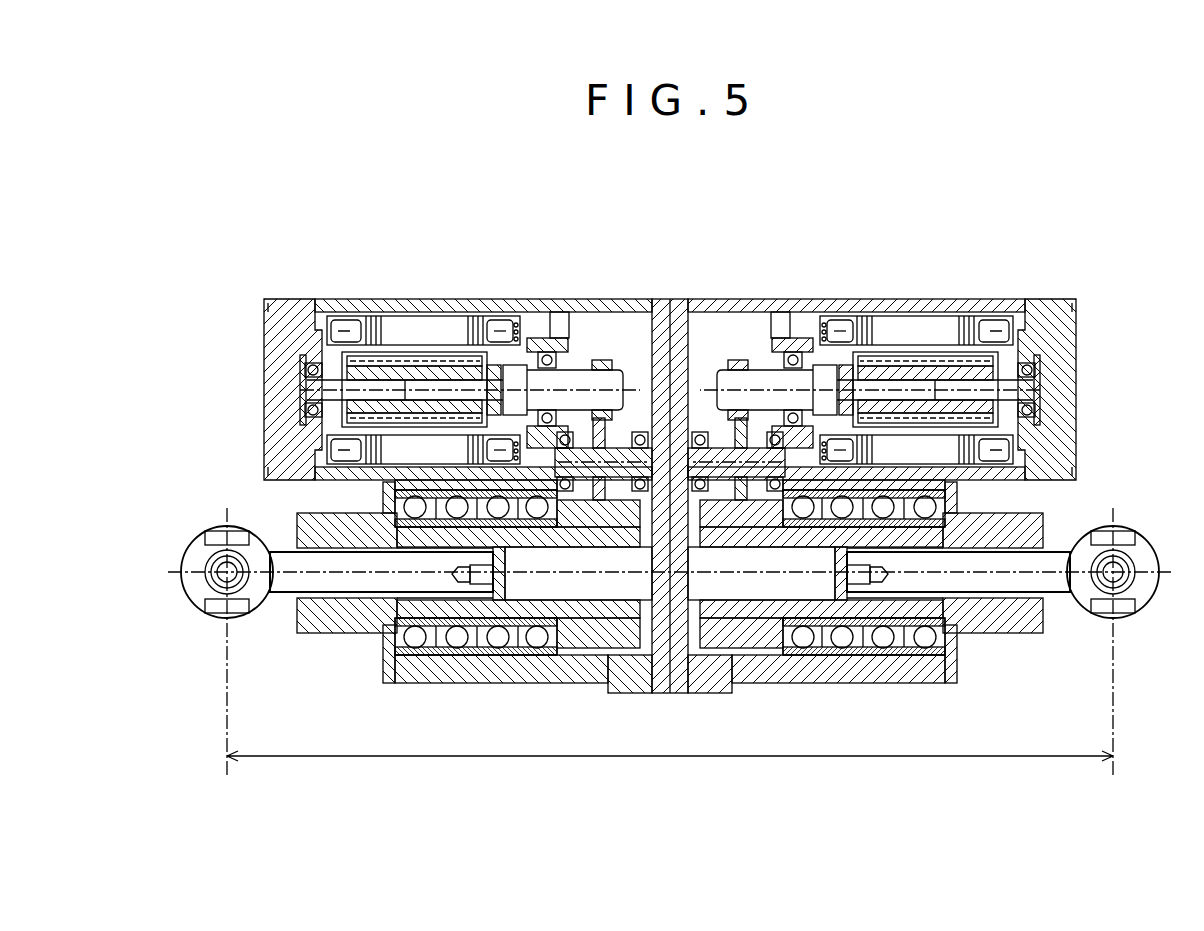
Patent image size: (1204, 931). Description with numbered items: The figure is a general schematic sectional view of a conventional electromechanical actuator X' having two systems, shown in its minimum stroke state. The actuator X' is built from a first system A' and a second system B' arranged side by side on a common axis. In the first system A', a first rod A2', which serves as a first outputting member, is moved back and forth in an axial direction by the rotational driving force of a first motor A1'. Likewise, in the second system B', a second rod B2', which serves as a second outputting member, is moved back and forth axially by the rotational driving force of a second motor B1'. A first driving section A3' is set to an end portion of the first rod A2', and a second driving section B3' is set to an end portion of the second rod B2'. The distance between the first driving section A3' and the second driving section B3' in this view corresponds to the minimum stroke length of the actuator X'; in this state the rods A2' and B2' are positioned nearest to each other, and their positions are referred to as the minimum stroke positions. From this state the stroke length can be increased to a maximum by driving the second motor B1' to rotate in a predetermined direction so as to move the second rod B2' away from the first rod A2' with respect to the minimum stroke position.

The electromechanical actuator X' is at (671, 469).
The first system A' is at (458, 355).
The first motor A1' is at (458, 354).
The first rod A2' is at (370, 617).
The first driving section A3' is at (209, 641).
The second system B' is at (882, 355).
The second motor B1' is at (882, 354).
The second rod B2' is at (964, 617).
The second driving section B3' is at (1132, 641).